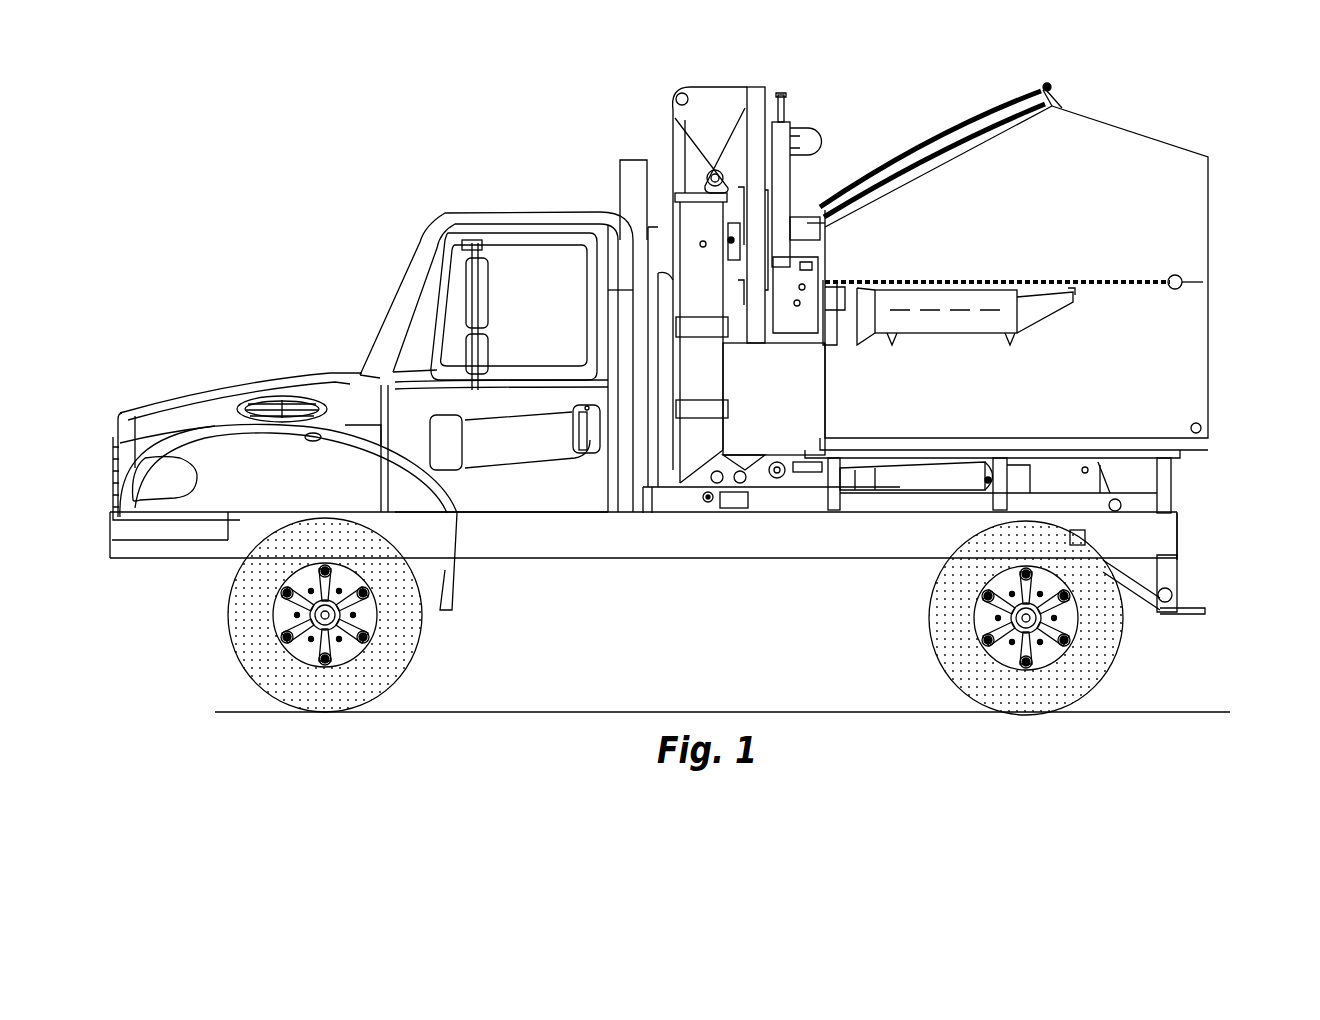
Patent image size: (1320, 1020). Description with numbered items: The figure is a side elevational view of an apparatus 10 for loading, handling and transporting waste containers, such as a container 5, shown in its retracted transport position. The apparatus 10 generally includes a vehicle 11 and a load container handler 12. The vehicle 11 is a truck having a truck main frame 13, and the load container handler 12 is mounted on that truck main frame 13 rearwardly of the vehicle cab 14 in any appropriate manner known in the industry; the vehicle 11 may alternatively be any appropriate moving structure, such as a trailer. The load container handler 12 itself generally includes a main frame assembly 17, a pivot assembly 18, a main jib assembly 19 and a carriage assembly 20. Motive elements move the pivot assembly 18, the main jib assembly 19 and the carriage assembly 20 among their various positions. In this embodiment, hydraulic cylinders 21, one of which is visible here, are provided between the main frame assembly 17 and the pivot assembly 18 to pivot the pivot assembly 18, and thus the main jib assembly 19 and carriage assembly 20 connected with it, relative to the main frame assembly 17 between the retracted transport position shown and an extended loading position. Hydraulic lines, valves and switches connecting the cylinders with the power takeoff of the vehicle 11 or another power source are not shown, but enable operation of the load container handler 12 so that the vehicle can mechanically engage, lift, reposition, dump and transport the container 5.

The apparatus 10 is at (328, 132).
The vehicle 11 is at (196, 368).
The vehicle cab 14 is at (530, 205).
The load container handler 12 is at (709, 68).
The carriage assembly 20 is at (796, 70).
The container 5 is at (1132, 125).
The main jib assembly 19 is at (760, 428).
The truck main frame 13 is at (590, 565).
The main frame assembly 17 is at (886, 515).
The hydraulic cylinders 21 is at (945, 485).
The pivot assembly 18 is at (1085, 478).